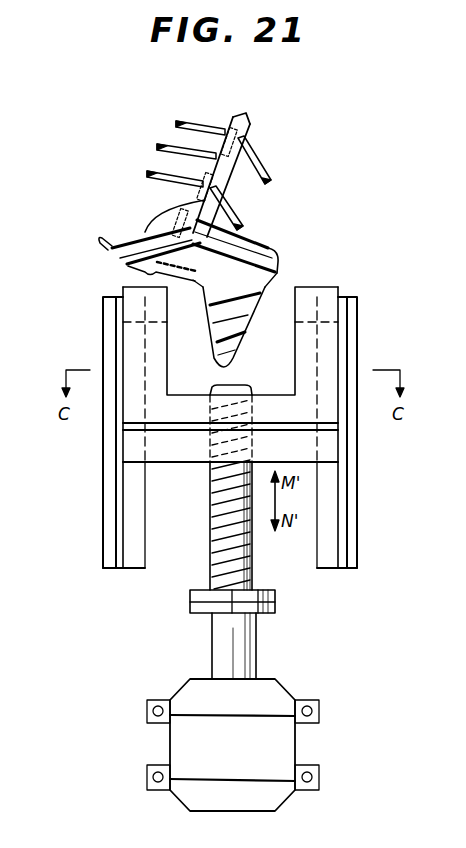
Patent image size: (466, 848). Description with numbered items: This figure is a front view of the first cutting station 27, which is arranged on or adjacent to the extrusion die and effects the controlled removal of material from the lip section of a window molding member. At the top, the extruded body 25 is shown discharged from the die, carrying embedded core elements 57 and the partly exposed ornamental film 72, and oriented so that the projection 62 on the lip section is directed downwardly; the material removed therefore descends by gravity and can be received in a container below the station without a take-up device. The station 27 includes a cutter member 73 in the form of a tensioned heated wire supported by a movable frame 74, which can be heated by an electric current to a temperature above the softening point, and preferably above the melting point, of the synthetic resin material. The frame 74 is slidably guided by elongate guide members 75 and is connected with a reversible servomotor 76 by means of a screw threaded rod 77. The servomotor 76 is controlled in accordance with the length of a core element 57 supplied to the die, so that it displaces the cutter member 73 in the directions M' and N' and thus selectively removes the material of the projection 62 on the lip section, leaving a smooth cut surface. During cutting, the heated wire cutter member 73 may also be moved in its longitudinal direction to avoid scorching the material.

The extruded body 25 is at (232, 117).
The core element 57 is at (196, 194).
The ornamental film 72 is at (153, 268).
The cutter member 73 is at (288, 287).
The first cutting station 27 is at (235, 414).
The projection 62 is at (248, 328).
The elongate guide member 75 is at (103, 463).
The movable frame 74 is at (188, 453).
The screw threaded rod 77 is at (252, 557).
The reversible servomotor 76 is at (298, 743).